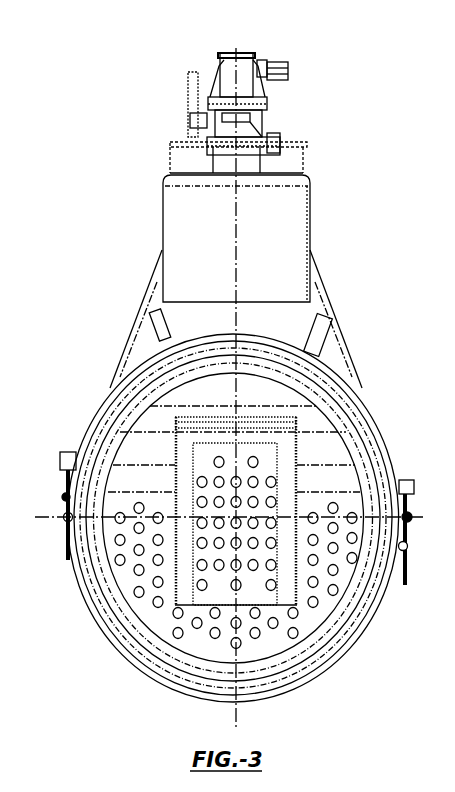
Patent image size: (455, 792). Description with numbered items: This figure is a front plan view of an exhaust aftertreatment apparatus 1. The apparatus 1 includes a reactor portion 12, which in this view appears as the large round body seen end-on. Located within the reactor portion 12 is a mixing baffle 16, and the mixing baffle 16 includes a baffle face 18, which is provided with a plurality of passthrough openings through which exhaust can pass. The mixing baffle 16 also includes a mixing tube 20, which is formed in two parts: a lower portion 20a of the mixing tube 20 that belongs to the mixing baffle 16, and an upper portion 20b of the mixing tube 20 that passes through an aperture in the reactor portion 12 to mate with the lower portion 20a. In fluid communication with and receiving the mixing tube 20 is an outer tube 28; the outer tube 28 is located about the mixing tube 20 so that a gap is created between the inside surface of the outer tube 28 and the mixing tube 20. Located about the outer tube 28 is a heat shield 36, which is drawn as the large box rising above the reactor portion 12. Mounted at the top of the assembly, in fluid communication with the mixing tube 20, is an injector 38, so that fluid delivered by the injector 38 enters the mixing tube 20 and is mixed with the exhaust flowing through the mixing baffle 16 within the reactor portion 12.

The exhaust aftertreatment apparatus 1 is at (237, 375).
The reactor portion 12 is at (377, 430).
The mixing baffle 16 is at (315, 502).
The baffle face 18 is at (320, 610).
The mixing tube 20 is at (158, 457).
The lower portion of the mixing tube 20a is at (220, 450).
The upper portion of the mixing tube 20b is at (225, 418).
The outer tube 28 is at (173, 328).
The heat shield 36 is at (188, 224).
The injector 38 is at (217, 75).